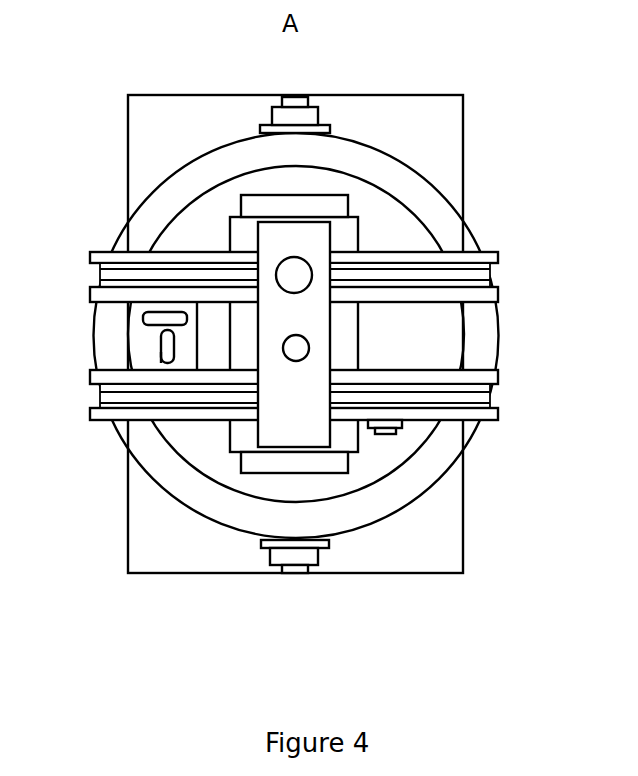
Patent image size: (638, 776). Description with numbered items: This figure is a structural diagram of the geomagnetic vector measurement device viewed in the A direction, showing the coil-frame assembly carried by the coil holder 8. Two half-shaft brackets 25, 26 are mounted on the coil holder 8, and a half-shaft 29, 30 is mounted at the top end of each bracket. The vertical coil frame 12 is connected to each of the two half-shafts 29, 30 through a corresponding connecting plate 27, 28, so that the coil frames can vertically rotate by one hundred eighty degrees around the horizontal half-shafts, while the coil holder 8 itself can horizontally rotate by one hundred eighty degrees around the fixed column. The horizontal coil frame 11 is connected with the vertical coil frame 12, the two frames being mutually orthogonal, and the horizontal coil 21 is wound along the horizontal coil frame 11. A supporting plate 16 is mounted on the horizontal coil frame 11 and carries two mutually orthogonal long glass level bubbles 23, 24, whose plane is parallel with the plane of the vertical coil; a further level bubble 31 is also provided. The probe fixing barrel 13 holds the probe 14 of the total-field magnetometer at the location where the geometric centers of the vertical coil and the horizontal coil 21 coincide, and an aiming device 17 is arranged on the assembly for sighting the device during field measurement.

The coil holder 8 is at (420, 537).
The horizontal coil frame 11 is at (408, 262).
The vertical coil frame 12 is at (435, 213).
The probe fixing barrel 13 is at (243, 241).
The probe of total-field magnetometer 14 is at (252, 205).
The supporting plate 16 is at (147, 338).
The aiming device 17 is at (280, 317).
The horizontal coil 21 is at (463, 282).
The glass long level bubble 23 is at (165, 353).
The glass long level bubble 24 is at (132, 313).
The half-shaft bracket 25 is at (283, 555).
The half-shaft bracket 26 is at (283, 102).
The connecting plate 27 is at (262, 547).
The connecting plate 28 is at (260, 125).
The half-shaft 29 is at (298, 573).
The half-shaft 30 is at (300, 102).
The level bubble 31 is at (398, 433).